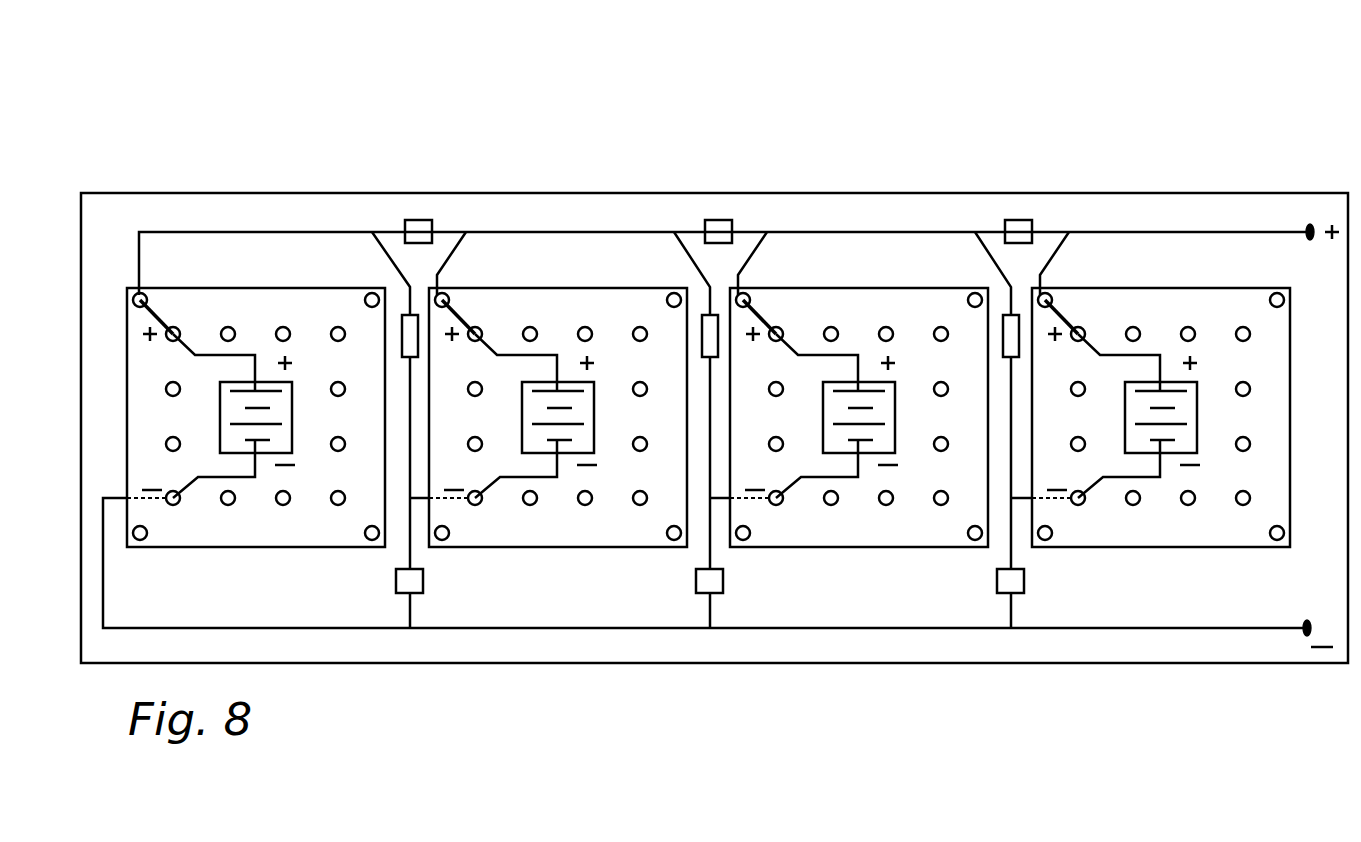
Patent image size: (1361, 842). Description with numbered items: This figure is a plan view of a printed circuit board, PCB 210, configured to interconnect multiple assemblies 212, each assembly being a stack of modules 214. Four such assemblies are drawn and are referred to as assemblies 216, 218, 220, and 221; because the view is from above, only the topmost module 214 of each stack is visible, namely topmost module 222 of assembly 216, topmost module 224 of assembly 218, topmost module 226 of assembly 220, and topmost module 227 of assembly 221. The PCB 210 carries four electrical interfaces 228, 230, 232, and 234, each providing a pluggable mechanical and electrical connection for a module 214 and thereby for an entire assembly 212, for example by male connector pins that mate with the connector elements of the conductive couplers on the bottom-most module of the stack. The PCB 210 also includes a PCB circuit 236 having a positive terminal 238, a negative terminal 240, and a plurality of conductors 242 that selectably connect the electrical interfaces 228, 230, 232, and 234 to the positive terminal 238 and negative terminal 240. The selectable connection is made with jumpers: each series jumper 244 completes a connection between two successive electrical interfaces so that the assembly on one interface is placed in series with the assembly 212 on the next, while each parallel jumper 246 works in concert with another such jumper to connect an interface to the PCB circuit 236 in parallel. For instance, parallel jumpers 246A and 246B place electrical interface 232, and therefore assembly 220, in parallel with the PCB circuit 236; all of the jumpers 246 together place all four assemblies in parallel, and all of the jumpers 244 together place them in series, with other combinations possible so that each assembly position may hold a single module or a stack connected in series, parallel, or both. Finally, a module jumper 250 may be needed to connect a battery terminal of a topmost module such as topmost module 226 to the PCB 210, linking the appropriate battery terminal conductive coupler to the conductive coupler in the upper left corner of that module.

The PCB 210 is at (1163, 217).
The assembly 212 is at (186, 217).
The module 214 is at (206, 158).
The assembly 216 is at (1176, 565).
The assembly 218 is at (872, 568).
The assembly 220 is at (582, 570).
The assembly 221 is at (236, 570).
The topmost module 222 is at (1131, 321).
The topmost module 224 is at (829, 321).
The topmost module 226 is at (528, 321).
The topmost module 227 is at (226, 321).
The electrical interface 228 is at (1146, 563).
The electrical interface 230 is at (839, 568).
The electrical interface 232 is at (551, 570).
The electrical interface 234 is at (204, 570).
The PCB circuit 236 is at (1104, 210).
The positive terminal 238 is at (1308, 226).
The negative terminal 240 is at (1305, 636).
The conductors 242 is at (1050, 630).
The series jumper 244 is at (403, 313).
The parallel jumper 246 is at (413, 219).
The parallel jumper 246A is at (727, 220).
The parallel jumper 246B is at (423, 581).
The module jumper 250 is at (459, 322).